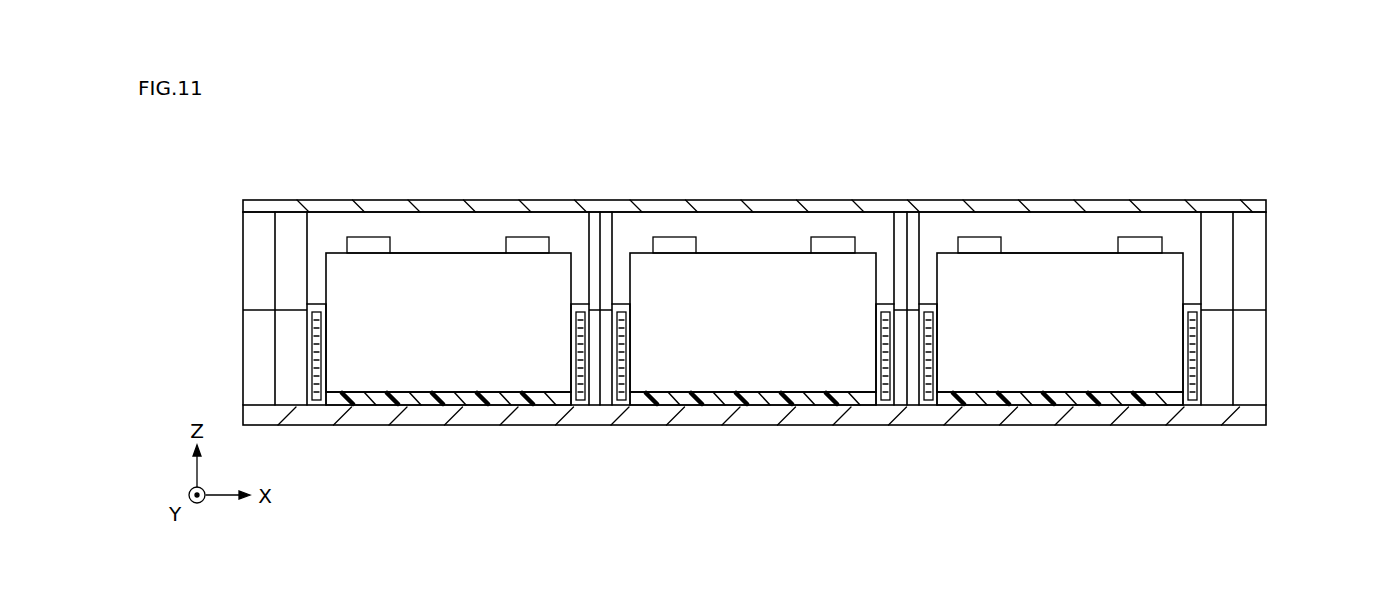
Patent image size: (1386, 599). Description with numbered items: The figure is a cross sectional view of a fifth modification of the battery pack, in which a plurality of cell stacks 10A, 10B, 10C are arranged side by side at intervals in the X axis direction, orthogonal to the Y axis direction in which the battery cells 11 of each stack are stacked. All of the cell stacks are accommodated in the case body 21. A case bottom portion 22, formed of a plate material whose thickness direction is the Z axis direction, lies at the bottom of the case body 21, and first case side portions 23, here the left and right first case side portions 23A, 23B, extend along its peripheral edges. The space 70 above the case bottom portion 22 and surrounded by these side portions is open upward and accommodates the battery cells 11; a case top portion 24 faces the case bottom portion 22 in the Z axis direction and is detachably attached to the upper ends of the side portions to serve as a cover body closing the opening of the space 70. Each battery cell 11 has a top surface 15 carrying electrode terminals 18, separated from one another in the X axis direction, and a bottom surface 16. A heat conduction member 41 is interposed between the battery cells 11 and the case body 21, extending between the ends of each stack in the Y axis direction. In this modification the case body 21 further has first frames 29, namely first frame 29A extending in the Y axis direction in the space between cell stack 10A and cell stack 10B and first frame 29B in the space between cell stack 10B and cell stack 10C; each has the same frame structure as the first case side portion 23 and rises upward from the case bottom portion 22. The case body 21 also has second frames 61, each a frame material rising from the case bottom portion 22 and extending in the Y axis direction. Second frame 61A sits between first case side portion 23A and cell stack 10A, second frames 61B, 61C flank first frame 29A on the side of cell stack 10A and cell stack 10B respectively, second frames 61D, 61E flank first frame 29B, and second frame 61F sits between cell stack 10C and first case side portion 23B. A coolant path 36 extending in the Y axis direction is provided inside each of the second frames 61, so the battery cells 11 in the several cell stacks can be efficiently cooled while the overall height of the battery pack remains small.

The cell stack 10A is at (420, 246).
The cell stack 10B is at (725, 246).
The cell stack 10C is at (1031, 246).
The battery cell 11 is at (754, 261).
The top surface 15 is at (485, 251).
The bottom surface 16 is at (465, 394).
The electrode terminal 18 is at (368, 245).
The case body 21 is at (1250, 196).
The case bottom portion 22 is at (1255, 418).
The first case side portion 23 is at (765, 308).
The first case side portion 23A is at (243, 258).
The first case side portion 23B is at (1267, 247).
The case top portion 24 is at (270, 207).
The first frame 29 is at (751, 268).
The first frame 29A is at (582, 225).
The first frame 29B is at (888, 225).
The coolant path 36 is at (316, 303).
The heat conduction member 41 is at (432, 395).
The second frame 61 is at (754, 392).
The second frame 61A is at (326, 340).
The second frame 61B is at (571, 340).
The second frame 61C is at (630, 340).
The second frame 61D is at (876, 340).
The second frame 61E is at (937, 340).
The second frame 61F is at (1183, 340).
The space 70 is at (452, 240).